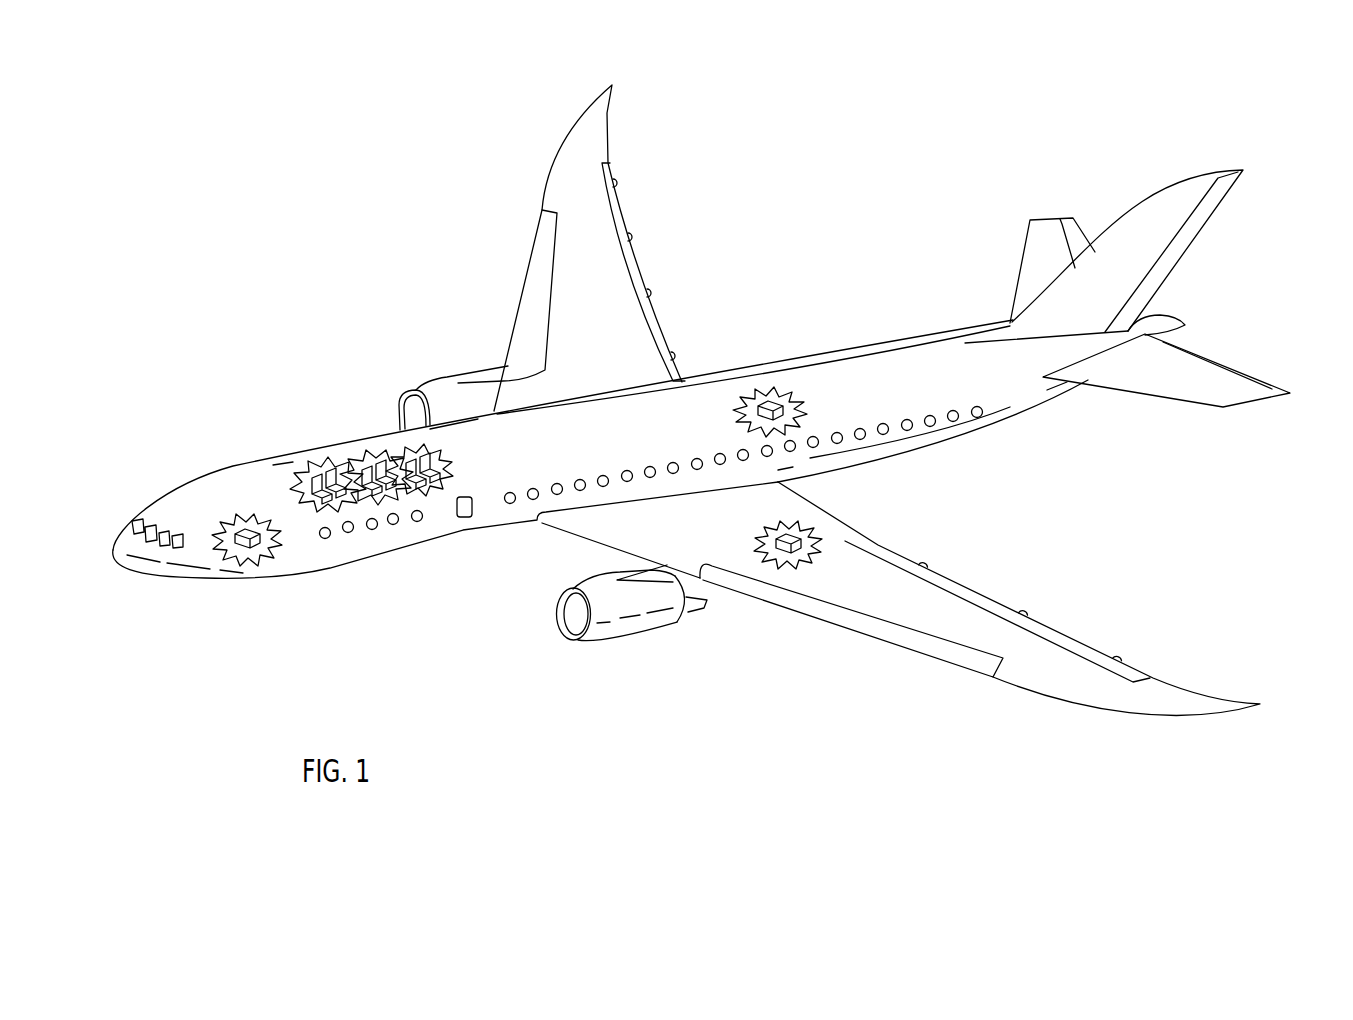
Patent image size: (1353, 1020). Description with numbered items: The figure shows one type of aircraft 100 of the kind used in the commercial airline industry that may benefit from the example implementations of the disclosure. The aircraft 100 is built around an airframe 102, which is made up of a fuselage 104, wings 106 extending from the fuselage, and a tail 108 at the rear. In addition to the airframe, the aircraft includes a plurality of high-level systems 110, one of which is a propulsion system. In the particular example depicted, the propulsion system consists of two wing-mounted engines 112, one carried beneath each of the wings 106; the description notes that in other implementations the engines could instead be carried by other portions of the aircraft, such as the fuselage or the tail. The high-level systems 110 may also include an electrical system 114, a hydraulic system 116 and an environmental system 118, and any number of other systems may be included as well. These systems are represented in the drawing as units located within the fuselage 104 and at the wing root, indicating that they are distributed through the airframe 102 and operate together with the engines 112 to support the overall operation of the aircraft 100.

The aircraft 100 is at (312, 278).
The airframe 102 is at (372, 427).
The fuselage 104 is at (393, 557).
The wings 106 is at (547, 192).
The tail 108 is at (972, 270).
The high-level systems 110 is at (1143, 576).
The wing-mounted engines 112 is at (442, 383).
The electrical system 114 is at (253, 513).
The hydraulic system 116 is at (790, 520).
The environmental system 118 is at (772, 390).